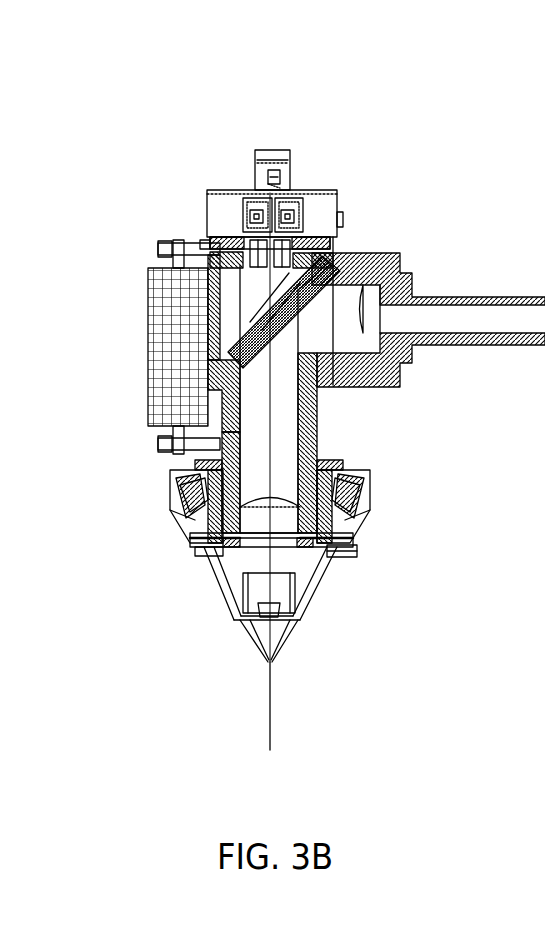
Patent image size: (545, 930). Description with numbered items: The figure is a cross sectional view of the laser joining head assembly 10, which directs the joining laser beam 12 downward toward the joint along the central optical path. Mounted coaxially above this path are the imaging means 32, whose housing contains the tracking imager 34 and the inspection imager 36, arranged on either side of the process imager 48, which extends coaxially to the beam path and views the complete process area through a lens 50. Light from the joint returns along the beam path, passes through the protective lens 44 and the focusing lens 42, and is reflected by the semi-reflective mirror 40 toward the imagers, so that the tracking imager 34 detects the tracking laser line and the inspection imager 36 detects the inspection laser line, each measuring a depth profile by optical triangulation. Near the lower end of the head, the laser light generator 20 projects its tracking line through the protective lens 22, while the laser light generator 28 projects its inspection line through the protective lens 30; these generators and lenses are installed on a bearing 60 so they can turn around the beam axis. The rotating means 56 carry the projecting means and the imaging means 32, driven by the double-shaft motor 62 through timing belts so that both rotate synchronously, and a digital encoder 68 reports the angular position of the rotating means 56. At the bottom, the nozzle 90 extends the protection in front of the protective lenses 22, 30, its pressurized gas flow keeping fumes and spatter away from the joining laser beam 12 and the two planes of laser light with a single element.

The laser joining head assembly 10 is at (303, 58).
The joining laser beam 12 is at (270, 750).
The laser light generator 20 is at (366, 511).
The protective lens 22 is at (348, 553).
The laser light generator 28 is at (182, 520).
The protective lens 30 is at (206, 560).
The imaging means 32 is at (203, 211).
The tracking 2D imager 34 is at (302, 198).
The inspection 2D imager 36 is at (238, 193).
The semi-reflective mirror 40 is at (334, 252).
The focusing lens 42 is at (282, 496).
The protective lens 44 is at (228, 602).
The process 2D imager 48 is at (289, 145).
The lens 50 is at (284, 179).
The rotating means 56 is at (158, 391).
The bearing 60 is at (328, 458).
The double-shaft motor 62 is at (148, 348).
The digital encoder 68 is at (317, 588).
The nozzle 90 is at (306, 626).